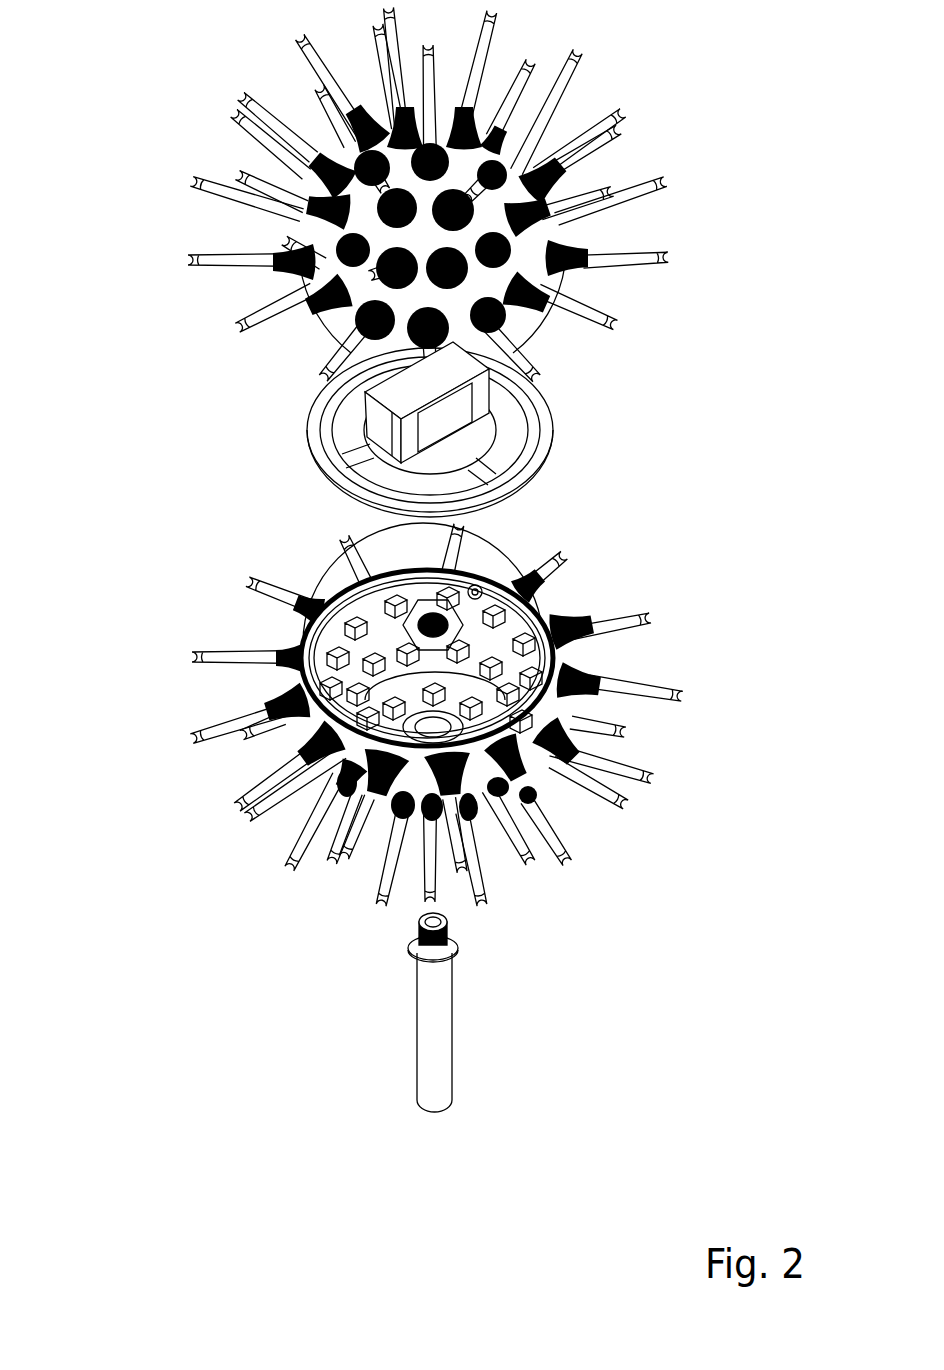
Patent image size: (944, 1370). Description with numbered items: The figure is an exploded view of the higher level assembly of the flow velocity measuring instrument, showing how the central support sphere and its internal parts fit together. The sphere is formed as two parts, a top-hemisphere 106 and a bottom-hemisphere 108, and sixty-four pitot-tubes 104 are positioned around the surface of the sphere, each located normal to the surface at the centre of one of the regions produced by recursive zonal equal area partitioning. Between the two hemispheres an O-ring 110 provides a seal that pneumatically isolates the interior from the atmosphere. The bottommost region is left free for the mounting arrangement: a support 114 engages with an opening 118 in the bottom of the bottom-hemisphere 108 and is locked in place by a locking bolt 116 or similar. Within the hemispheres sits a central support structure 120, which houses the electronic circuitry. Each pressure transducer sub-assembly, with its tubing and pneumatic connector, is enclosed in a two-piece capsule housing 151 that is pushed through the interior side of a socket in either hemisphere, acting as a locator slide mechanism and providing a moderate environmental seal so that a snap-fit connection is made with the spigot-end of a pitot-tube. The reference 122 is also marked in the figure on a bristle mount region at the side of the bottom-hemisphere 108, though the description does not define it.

The pitot-tubes 104 is at (190, 652).
The top-hemisphere 106 is at (510, 317).
The bottom-hemisphere 108 is at (446, 705).
The O-ring 110 is at (530, 610).
The support 114 is at (440, 977).
The locking bolt 116 is at (533, 805).
The opening 118 is at (405, 720).
The central support structure 120 is at (535, 447).
The bristle mount 122 is at (293, 703).
The two-piece capsule housing 151 is at (350, 617).